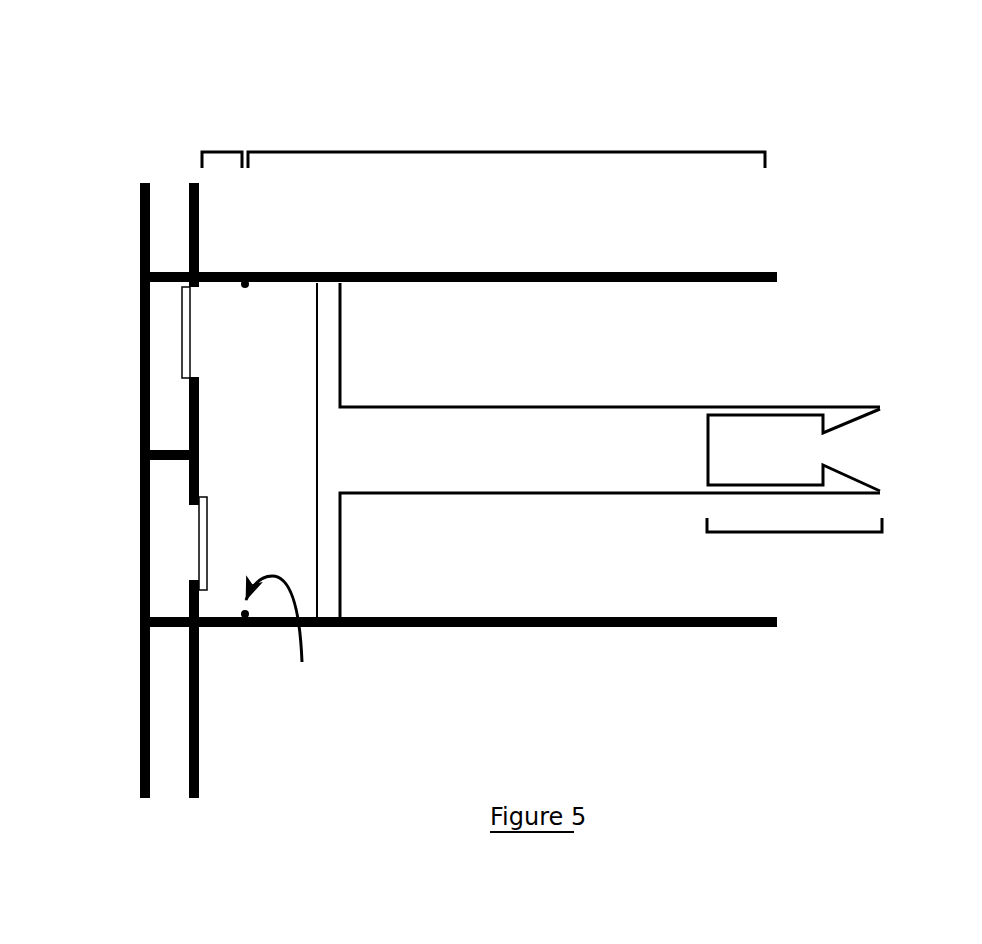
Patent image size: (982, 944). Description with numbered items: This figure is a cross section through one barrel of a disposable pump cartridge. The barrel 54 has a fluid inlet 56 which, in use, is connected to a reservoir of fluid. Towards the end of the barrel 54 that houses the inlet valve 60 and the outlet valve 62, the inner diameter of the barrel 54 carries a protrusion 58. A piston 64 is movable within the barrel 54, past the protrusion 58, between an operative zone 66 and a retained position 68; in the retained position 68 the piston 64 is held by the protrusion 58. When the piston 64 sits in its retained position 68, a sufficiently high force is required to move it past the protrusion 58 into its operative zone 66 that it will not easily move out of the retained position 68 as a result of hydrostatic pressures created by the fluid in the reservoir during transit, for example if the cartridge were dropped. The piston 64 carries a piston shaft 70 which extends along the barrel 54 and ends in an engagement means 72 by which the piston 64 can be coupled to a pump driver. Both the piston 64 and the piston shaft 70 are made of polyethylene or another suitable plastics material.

The barrel 54 is at (606, 630).
The fluid inlet 56 is at (175, 180).
The protrusion 58 is at (280, 485).
The inlet valve 60 is at (194, 533).
The outlet valve 62 is at (180, 342).
The piston 64 is at (325, 575).
The operative zone 66 is at (485, 152).
The retained position 68 is at (226, 150).
The piston shaft 70 is at (458, 462).
The engagement means 72 is at (793, 532).